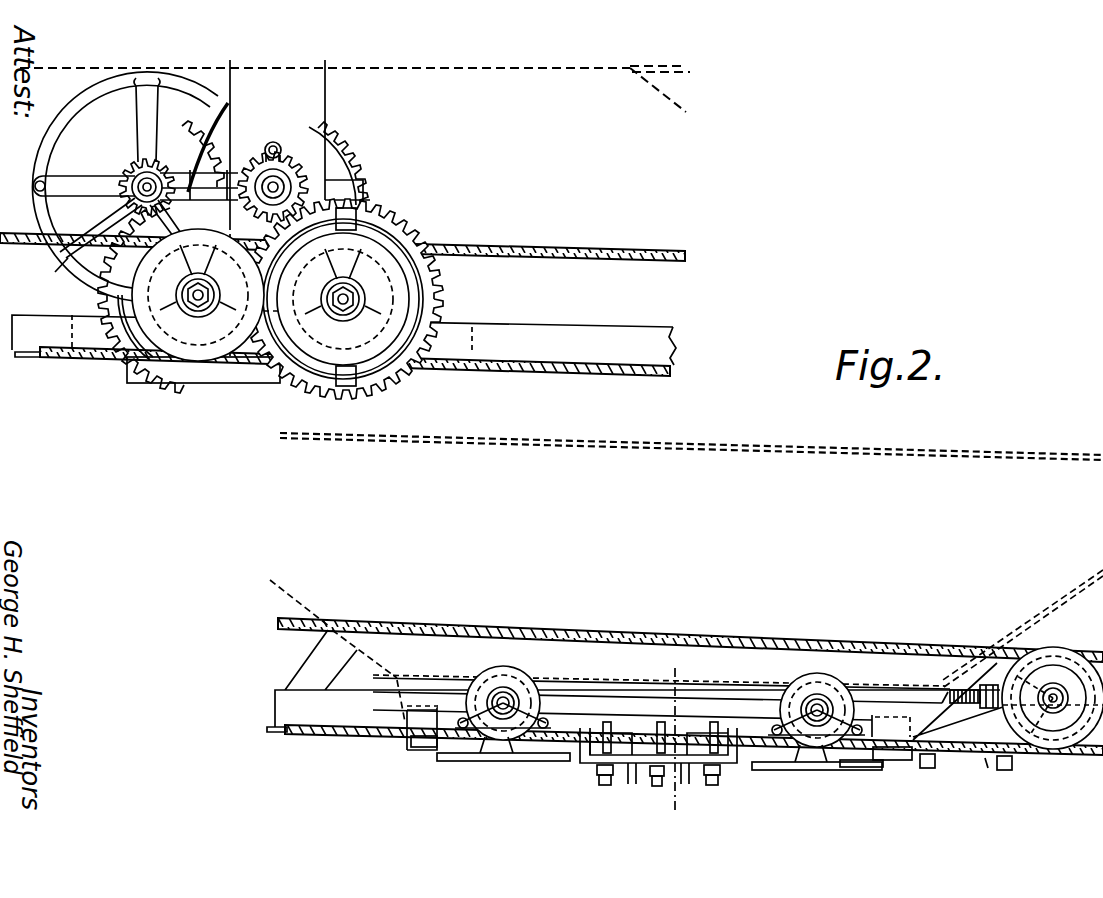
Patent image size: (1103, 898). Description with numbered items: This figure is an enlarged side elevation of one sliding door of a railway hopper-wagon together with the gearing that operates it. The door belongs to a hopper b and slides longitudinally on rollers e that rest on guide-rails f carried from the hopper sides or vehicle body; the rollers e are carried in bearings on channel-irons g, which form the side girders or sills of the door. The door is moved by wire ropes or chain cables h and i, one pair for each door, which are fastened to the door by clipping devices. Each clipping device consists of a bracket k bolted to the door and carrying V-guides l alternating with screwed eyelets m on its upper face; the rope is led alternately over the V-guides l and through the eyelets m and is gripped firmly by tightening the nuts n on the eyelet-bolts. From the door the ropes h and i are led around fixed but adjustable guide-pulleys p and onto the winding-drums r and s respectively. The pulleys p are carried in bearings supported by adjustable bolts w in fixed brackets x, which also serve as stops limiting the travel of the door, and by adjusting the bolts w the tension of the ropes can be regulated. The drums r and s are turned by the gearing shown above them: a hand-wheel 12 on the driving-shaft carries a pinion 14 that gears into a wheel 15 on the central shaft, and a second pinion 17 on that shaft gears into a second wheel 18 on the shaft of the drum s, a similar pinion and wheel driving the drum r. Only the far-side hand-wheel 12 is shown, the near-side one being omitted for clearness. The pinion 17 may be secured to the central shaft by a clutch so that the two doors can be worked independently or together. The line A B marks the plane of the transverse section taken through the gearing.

The hand-wheel 12 is at (44, 152).
The pinion 14 is at (133, 170).
The wheel 15 is at (342, 163).
The second pinion 17 is at (286, 166).
The second wheel 18 is at (445, 295).
The hopper b is at (666, 90).
The guide-rails f is at (618, 328).
The wire ropes or chain cables h is at (50, 278).
The wire ropes or chain cables i is at (962, 768).
The winding-drum r is at (198, 295).
The winding-drum s is at (343, 299).
The rollers e is at (516, 690).
The brackets k is at (647, 778).
The V-guides l is at (585, 726).
The screwed eyelets m is at (677, 728).
The nuts n is at (720, 778).
The channel-irons g is at (905, 760).
The fixed brackets x is at (986, 782).
The guide-pulleys p is at (1040, 748).
The adjustable bolts w is at (974, 685).
The section line A B A is at (685, 729).
The section line A B is at (684, 814).